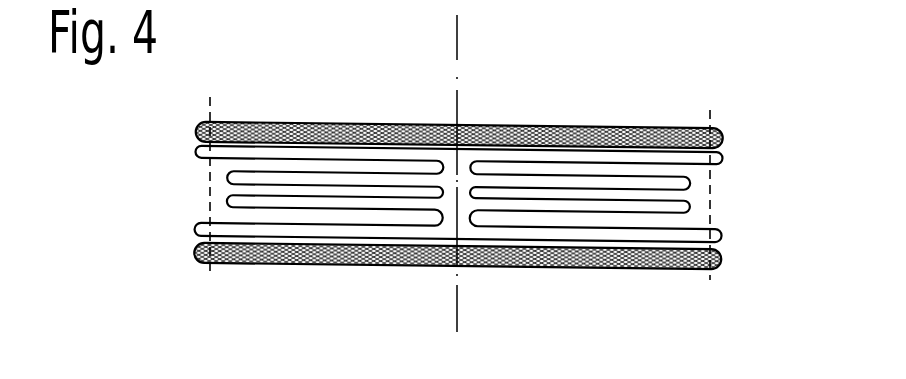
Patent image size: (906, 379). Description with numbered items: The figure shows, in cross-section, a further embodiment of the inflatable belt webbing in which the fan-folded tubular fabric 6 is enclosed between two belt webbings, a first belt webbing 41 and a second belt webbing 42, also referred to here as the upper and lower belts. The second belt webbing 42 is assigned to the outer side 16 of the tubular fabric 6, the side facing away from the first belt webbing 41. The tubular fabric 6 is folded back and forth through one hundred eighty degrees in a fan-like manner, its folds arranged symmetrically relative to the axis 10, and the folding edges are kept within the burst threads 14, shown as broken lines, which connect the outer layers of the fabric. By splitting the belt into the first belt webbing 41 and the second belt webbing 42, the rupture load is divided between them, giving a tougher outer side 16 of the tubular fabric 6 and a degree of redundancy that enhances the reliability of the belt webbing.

The axis 10 is at (458, 65).
The burst threads 14 is at (210, 99).
The outer side 16 is at (688, 130).
The second belt webbing 42 is at (612, 127).
The first belt webbing 41 is at (633, 267).
The tubular fabric 6 is at (722, 237).